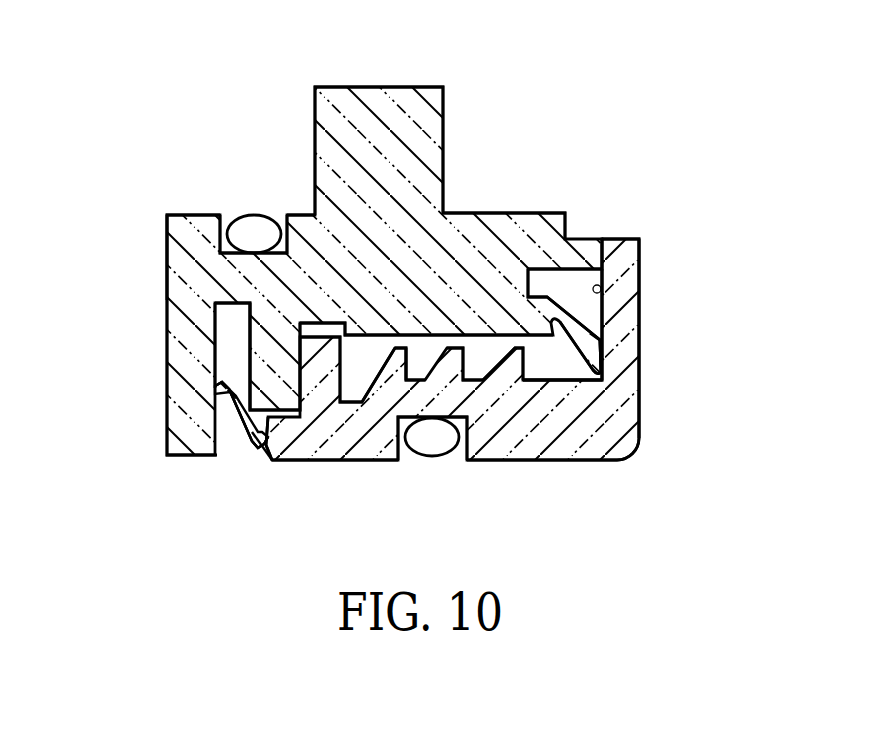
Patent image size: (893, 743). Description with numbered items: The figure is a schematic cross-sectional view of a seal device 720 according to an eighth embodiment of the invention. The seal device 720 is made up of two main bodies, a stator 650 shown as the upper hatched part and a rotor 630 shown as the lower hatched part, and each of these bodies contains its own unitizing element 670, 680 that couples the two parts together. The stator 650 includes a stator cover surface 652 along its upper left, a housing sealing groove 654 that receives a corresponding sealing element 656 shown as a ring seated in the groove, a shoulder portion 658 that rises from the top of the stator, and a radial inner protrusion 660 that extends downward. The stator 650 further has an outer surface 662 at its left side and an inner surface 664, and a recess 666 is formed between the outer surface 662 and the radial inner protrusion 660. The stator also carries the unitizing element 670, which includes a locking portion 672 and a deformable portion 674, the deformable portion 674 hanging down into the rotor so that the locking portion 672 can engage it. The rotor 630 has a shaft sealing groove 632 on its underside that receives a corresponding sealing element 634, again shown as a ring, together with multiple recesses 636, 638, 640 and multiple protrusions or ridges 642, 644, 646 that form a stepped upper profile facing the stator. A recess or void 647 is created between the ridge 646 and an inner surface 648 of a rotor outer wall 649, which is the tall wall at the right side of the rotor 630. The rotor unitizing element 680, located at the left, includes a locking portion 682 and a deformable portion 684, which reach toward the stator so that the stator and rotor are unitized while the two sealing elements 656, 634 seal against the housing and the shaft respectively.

The seal device 720 is at (683, 95).
The shoulder portion 658 is at (437, 152).
The stator 650 is at (417, 225).
The sealing element 656 is at (255, 228).
The housing sealing groove 654 is at (222, 243).
The radial inner protrusion 660 is at (275, 332).
The deformable portion 674 is at (567, 300).
The rotor outer wall 649 is at (635, 255).
The stator cover surface 652 is at (182, 277).
The inner surface 648 is at (605, 293).
The unitizing element 670 is at (590, 319).
The outer surface 662 is at (165, 315).
The locking portion 672 is at (597, 346).
The recess 638 is at (418, 357).
The recess 666 is at (220, 348).
The recess or void 647 is at (475, 353).
The inner surface 664 is at (220, 372).
The recess 640 is at (572, 365).
The locking portion 682 is at (225, 412).
The unitizing element 680 is at (230, 432).
The deformable portion 684 is at (256, 445).
The recess 636 is at (355, 373).
The protrusion or ridge 642 is at (390, 373).
The sealing element 634 is at (428, 445).
The shaft sealing groove 632 is at (450, 377).
The protrusion or ridge 644 is at (500, 380).
The protrusion or ridge 646 is at (540, 385).
The rotor 630 is at (583, 425).